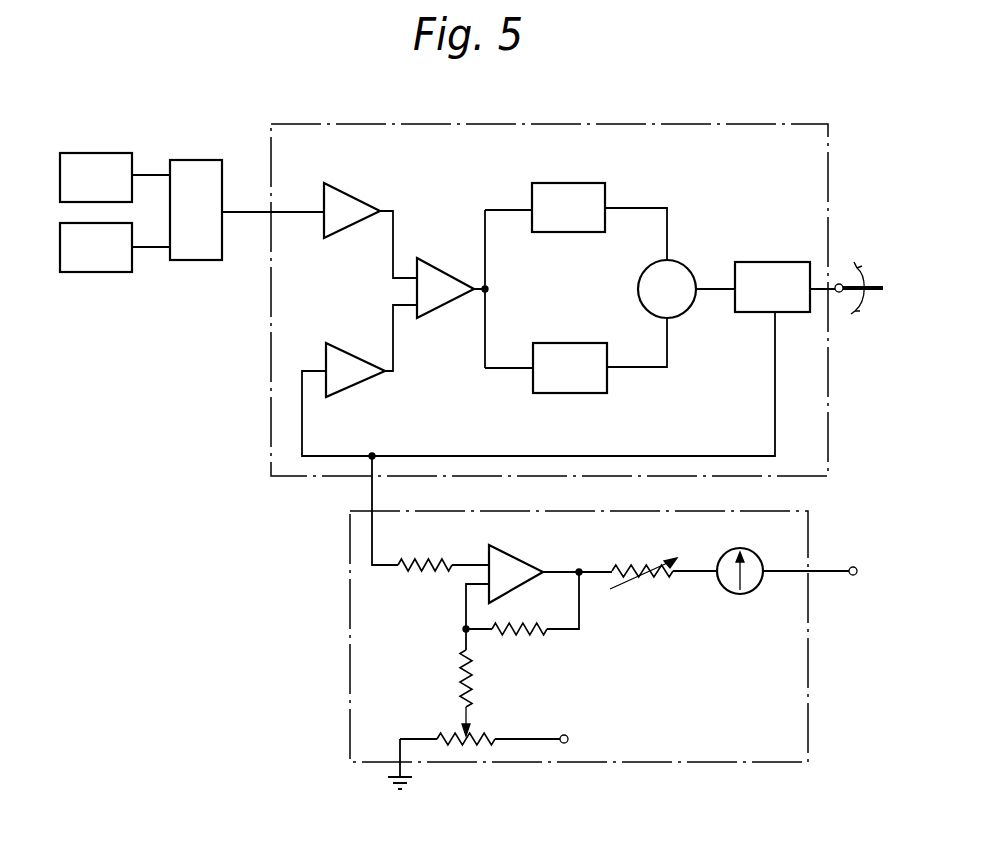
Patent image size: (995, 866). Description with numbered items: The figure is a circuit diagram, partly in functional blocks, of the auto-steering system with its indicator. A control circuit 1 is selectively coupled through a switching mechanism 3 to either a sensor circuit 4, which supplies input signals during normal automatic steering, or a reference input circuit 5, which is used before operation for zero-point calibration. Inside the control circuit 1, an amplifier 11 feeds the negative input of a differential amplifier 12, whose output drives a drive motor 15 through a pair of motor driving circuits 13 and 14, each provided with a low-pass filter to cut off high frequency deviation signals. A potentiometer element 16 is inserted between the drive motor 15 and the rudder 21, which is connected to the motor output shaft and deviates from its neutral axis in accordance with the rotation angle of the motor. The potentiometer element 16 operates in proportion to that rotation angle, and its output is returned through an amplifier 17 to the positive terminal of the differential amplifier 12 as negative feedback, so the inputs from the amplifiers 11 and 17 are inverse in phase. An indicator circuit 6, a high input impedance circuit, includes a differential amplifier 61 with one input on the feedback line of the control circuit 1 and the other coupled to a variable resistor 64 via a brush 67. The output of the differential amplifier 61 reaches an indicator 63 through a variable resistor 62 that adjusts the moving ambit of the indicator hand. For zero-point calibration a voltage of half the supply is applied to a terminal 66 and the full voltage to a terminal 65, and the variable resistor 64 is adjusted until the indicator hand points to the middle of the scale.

The control circuit 1 is at (505, 125).
The switching mechanism 3 is at (207, 168).
The sensor circuit 4 is at (107, 260).
The reference input circuit 5 is at (84, 157).
The indicator circuit 6 is at (350, 668).
The amplifier 11 is at (332, 188).
The differential amplifier 12 is at (450, 273).
The motor driving circuit 13 is at (597, 190).
The motor driving circuit 14 is at (590, 388).
The drive motor 15 is at (683, 304).
The potentiometer element 16 is at (757, 270).
The amplifier 17 is at (352, 378).
The rudder 21 is at (840, 284).
The differential amplifier 61 is at (512, 560).
The variable resistor 62 is at (646, 585).
The indicator 63 is at (742, 595).
The variable resistor 64 is at (468, 746).
The terminal 65 is at (583, 738).
The terminal 66 is at (874, 573).
The brush 67 is at (468, 713).